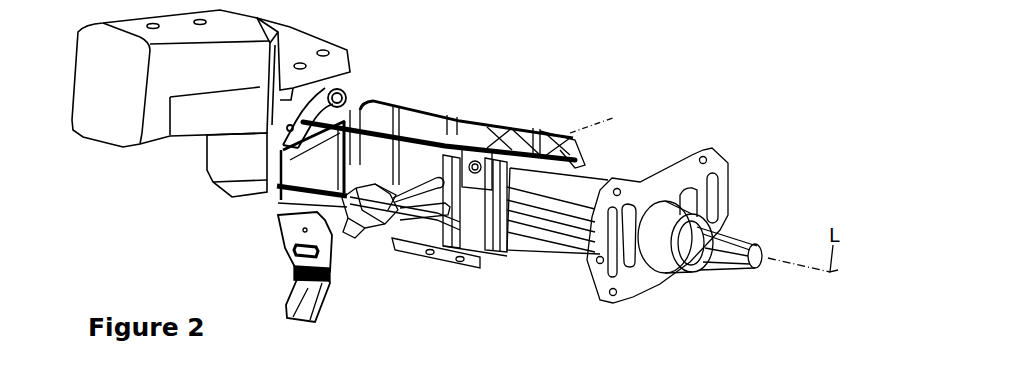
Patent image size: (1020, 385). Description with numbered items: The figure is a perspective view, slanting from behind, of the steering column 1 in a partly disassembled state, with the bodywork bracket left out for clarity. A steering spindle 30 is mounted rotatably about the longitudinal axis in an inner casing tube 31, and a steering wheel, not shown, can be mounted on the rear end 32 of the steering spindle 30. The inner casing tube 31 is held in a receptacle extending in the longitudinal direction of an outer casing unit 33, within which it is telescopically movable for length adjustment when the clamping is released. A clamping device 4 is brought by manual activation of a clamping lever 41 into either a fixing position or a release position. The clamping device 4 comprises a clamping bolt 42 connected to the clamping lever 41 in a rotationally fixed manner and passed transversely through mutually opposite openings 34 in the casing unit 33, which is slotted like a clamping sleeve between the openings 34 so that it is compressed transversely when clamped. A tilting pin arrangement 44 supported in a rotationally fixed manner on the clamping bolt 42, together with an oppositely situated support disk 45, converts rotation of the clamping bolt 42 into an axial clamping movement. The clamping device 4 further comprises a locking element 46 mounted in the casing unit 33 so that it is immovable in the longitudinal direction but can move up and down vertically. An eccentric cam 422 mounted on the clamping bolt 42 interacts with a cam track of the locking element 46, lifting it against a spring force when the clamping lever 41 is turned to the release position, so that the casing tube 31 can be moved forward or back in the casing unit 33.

The steering column 1 is at (543, 72).
The clamping device 4 is at (303, 230).
The steering spindle 30 is at (718, 210).
The inner casing tube 31 is at (578, 185).
The rear end of the steering spindle 32 is at (752, 242).
The outer casing unit 33 is at (413, 170).
The openings 34 is at (557, 137).
The clamping lever 41 is at (300, 305).
The clamping bolt 42 is at (335, 240).
The tilting pin arrangement 44 is at (300, 203).
The support disk 45 is at (400, 243).
The locking element 46 is at (470, 118).
The eccentric cam 422 is at (507, 135).